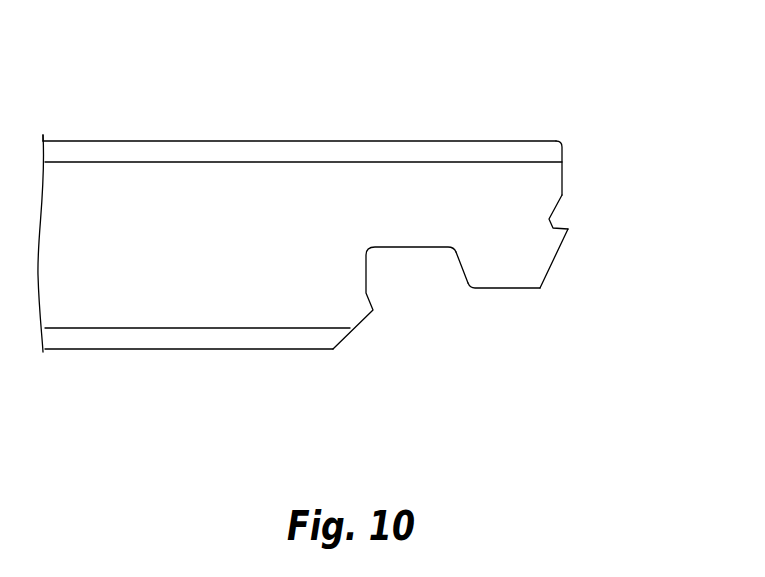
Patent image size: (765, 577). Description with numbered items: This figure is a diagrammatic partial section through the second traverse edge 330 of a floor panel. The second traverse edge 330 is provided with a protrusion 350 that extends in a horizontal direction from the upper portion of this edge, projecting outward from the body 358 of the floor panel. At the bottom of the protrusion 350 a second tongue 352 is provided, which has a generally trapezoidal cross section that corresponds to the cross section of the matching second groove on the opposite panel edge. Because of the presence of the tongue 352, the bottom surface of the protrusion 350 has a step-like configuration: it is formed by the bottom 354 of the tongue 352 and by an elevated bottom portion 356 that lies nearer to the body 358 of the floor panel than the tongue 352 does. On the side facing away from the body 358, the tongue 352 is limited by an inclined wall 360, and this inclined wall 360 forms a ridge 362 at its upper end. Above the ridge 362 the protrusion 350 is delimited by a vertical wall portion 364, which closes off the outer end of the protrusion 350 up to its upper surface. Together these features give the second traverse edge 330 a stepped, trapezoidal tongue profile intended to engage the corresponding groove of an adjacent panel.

The second traverse edge 330 is at (575, 392).
The protrusion 350 is at (495, 193).
The second tongue 352 is at (512, 273).
The bottom of the tongue 354 is at (507, 288).
The elevated bottom portion 356 is at (412, 250).
The body 358 is at (178, 262).
The inclined wall 360 is at (557, 257).
The ridge 362 is at (553, 227).
The vertical wall portion 364 is at (563, 168).